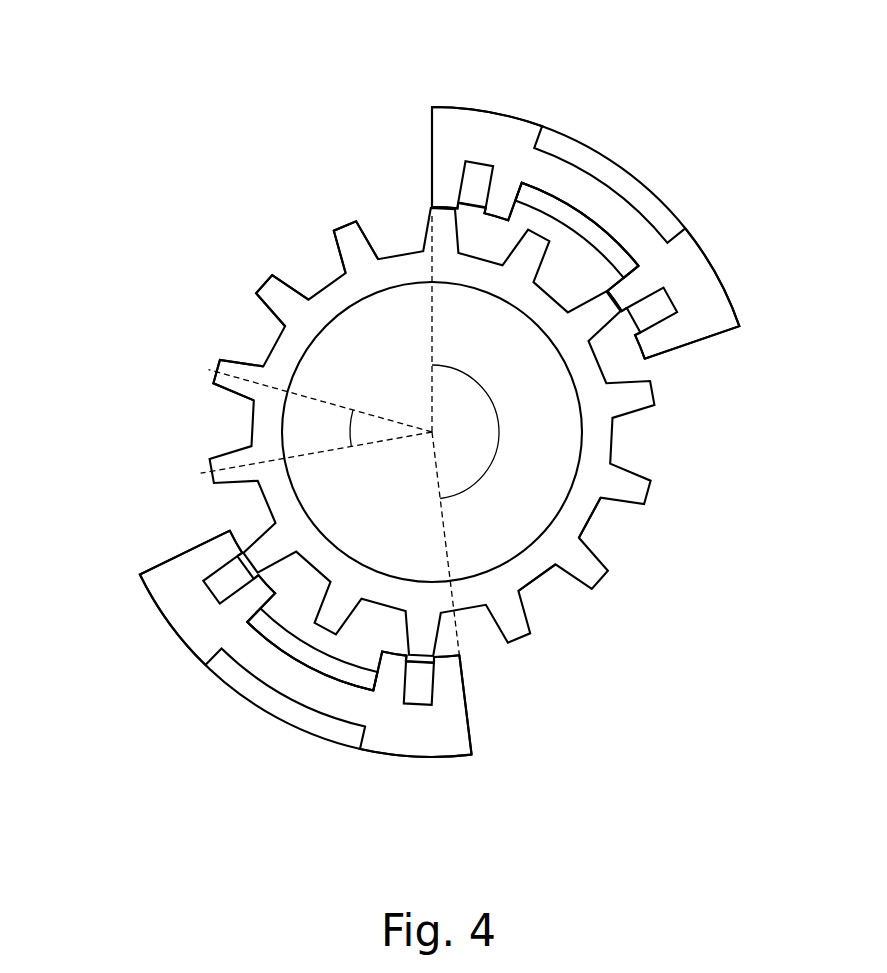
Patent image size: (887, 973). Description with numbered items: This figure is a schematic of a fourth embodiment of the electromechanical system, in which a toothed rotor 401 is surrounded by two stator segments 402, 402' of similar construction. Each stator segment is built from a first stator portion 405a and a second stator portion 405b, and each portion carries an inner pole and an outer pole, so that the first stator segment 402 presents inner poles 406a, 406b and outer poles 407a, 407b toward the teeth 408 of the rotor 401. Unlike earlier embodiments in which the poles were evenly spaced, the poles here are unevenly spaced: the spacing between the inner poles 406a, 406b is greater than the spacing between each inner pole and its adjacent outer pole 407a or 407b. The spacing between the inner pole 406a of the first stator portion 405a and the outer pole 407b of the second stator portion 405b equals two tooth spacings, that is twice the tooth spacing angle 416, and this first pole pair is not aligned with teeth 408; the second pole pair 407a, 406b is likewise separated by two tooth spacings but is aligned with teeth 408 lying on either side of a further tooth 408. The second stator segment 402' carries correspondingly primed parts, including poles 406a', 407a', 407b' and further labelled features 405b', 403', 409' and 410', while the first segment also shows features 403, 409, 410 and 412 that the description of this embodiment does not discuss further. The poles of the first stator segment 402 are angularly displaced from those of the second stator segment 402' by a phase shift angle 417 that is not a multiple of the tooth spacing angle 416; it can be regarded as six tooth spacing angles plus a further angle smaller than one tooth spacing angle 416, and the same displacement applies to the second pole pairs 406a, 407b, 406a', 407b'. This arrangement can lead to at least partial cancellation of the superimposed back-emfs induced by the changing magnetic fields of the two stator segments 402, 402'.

The rotor 401 is at (641, 488).
The stator segment 402 is at (585, 208).
The second stator segment 402' is at (301, 691).
The radial permanent magnet 403 is at (573, 243).
The radial permanent magnet (second) 403' is at (340, 702).
The first stator portion 405a is at (448, 128).
The second stator portion 405b is at (756, 293).
The segment end portion (second) 405b' is at (317, 633).
The inner pole 406a is at (523, 139).
The inner pole of second stator segment 406a' is at (244, 708).
The inner pole 406b is at (639, 294).
The outer pole 407a is at (385, 158).
The outer pole of second stator segment 407a' is at (521, 684).
The outer pole 407b is at (748, 361).
The outer pole of second stator segment 407b' is at (166, 520).
The teeth 408 is at (350, 234).
The yoke between magnets 409 is at (580, 162).
The yoke between magnets (second) 409' is at (238, 698).
The arc permanent magnets 410 is at (650, 202).
The arc permanent magnets (second) 410' is at (291, 736).
The tooth gap 412 is at (606, 527).
The tooth spacing angle 416 is at (350, 425).
The phase shift angle 417 is at (497, 420).